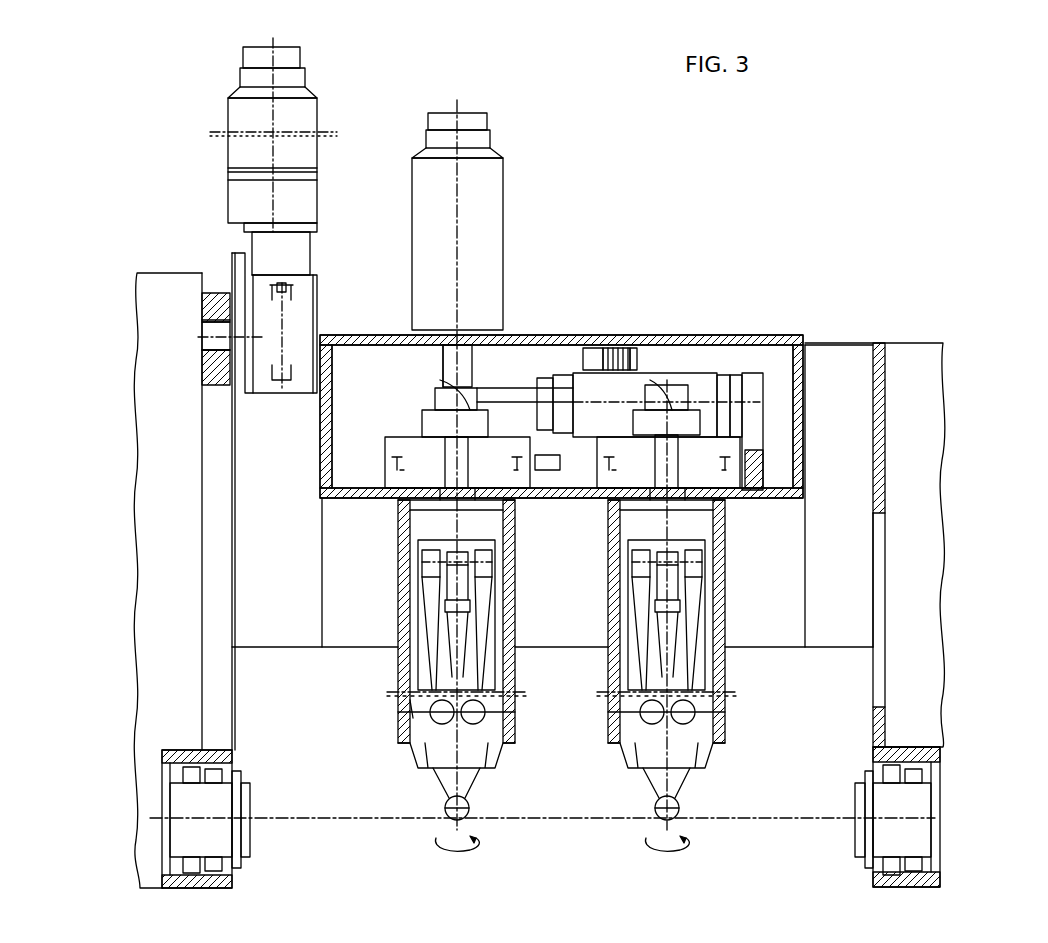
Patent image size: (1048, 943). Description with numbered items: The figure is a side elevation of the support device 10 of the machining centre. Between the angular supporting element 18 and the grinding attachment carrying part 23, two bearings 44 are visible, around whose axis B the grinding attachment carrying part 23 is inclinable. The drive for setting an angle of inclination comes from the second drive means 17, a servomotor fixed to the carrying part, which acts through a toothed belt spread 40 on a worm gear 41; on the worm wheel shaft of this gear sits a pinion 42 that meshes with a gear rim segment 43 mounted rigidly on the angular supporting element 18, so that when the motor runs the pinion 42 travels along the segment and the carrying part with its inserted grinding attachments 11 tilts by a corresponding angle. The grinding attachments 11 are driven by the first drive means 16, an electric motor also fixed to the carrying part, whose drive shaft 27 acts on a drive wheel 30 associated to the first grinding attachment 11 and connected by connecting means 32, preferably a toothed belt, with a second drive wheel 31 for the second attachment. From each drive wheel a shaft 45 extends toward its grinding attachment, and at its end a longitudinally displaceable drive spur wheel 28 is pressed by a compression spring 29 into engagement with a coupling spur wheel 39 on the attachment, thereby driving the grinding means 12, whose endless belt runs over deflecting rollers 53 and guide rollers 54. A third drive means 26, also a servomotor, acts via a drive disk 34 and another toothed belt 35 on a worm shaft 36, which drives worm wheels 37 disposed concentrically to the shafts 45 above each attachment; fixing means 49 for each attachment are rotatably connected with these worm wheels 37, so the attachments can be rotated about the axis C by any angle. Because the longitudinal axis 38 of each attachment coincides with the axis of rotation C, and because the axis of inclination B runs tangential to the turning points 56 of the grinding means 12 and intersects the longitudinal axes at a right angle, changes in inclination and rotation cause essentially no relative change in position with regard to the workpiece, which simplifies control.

The support device 10 is at (620, 337).
The grinding attachment 11 is at (397, 722).
The grinding means 12 is at (537, 800).
The first drive means 16 is at (478, 230).
The second drive means 17 is at (293, 118).
The angular supporting element 18 is at (170, 373).
The grinding attachment carrying part 23 is at (512, 352).
The third drive means 26 is at (703, 382).
The drive shaft 27 is at (443, 368).
The drive spur wheel 28 is at (478, 452).
The compression spring 29 is at (468, 470).
The drive wheel 30 is at (433, 393).
The second drive wheel 31 is at (690, 372).
The connecting means 32 is at (612, 392).
The drive disk 34 is at (758, 387).
The toothed belt 35 is at (758, 447).
The worm shaft 36 is at (565, 480).
The worm wheel 37 is at (388, 463).
The longitudinal axis 38 is at (490, 745).
The coupling spur wheel 39 is at (485, 500).
The toothed belt spread 40 is at (300, 208).
The worm gear 41 is at (272, 285).
The pinion 42 is at (215, 330).
The gear rim segment 43 is at (225, 320).
The bearing 44 is at (200, 830).
The shaft 45 is at (443, 380).
The fixing means 49 is at (535, 672).
The deflecting roller 53 is at (420, 563).
The guide roller 54 is at (425, 735).
The turning point 56 is at (460, 818).
The axis of inclination B is at (880, 815).
The axis of rotation C is at (507, 840).